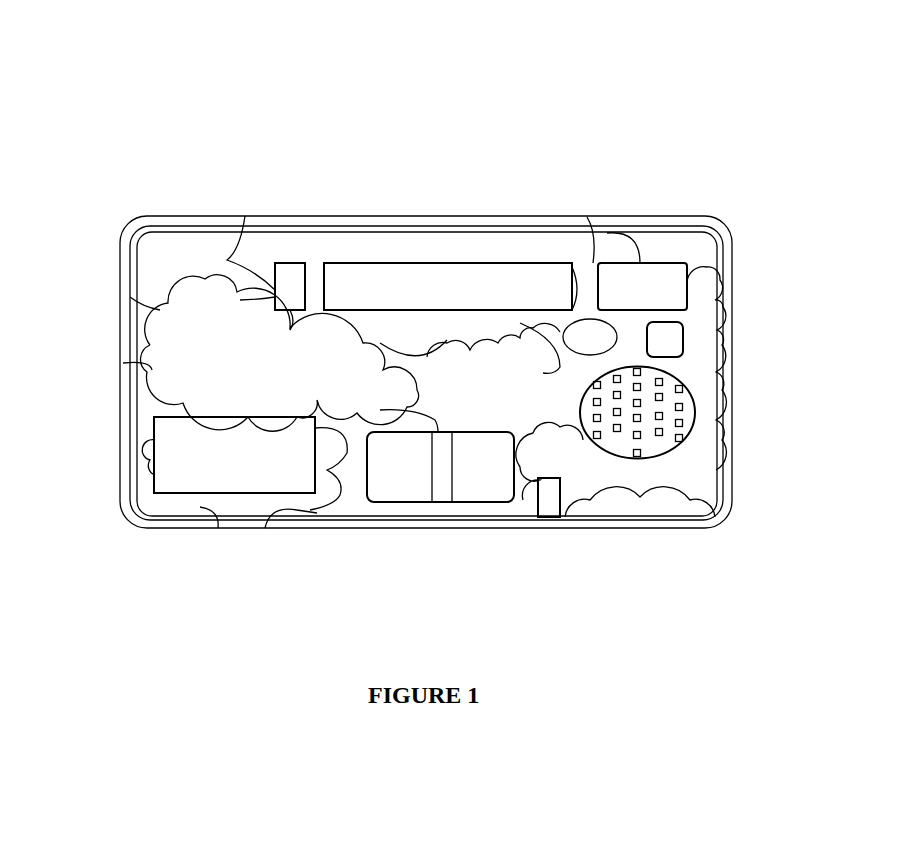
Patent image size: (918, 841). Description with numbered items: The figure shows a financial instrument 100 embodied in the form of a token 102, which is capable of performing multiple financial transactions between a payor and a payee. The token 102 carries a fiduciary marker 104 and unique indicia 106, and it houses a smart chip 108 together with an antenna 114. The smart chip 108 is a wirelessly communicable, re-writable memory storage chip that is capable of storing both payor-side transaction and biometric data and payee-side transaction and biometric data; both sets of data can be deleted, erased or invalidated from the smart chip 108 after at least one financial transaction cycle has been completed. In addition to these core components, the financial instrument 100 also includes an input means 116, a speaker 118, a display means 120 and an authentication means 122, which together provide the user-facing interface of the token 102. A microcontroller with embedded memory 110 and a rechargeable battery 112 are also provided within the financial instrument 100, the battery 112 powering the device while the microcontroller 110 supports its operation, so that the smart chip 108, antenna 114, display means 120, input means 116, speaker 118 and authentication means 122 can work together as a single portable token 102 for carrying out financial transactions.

The financial instrument 100 is at (375, 274).
The token 102 is at (217, 216).
The fiduciary marker 104 is at (145, 311).
The unique indicia 106 is at (688, 288).
The smart chip 108 is at (440, 503).
The microcontroller with embedded memory 110 is at (685, 338).
The rechargeable battery 112 is at (558, 517).
The antenna 114 is at (137, 425).
The input means 116 is at (187, 493).
The speaker 118 is at (695, 430).
The display means 120 is at (442, 263).
The authentication means 122 is at (291, 263).